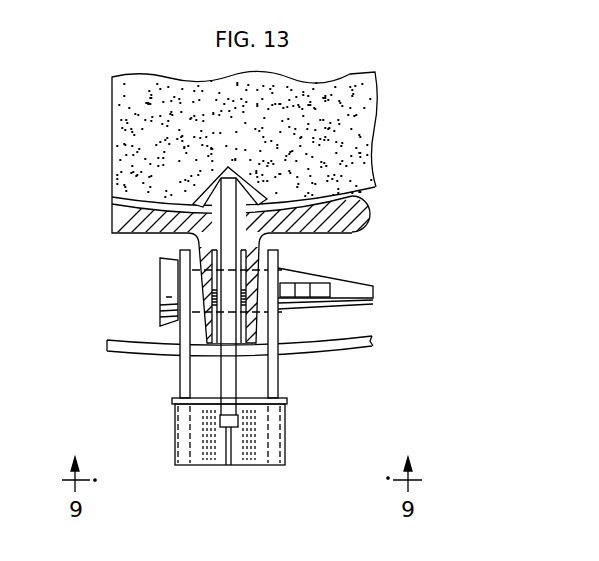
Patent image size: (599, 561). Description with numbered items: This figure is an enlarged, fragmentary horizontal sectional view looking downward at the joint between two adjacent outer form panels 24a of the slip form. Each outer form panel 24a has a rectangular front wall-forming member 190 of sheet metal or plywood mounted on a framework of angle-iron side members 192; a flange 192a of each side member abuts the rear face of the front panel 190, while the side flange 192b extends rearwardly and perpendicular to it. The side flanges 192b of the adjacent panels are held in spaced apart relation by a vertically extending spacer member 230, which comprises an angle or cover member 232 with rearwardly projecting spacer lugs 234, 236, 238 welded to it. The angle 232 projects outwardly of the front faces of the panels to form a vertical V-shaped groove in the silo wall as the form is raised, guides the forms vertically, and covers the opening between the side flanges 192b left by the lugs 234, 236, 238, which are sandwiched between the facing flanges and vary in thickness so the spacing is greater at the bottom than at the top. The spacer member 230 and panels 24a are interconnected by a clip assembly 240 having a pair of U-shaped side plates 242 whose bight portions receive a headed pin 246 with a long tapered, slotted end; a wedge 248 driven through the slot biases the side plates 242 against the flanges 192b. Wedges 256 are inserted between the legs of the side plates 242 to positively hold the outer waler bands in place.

The front planar face or wall-forming member 190 is at (118, 196).
The vertically extending side member 192 is at (124, 238).
The flange 192a is at (180, 208).
The side flange 192b is at (255, 327).
The spacer member 230 is at (240, 167).
The angle or cover member 232 is at (219, 178).
The spacer lug 234 is at (291, 239).
The spacer lug 236 is at (291, 239).
The spacer lug 238 is at (228, 203).
The outer form panel 24a is at (144, 258).
The headed pin 246 is at (283, 277).
The wedge 248 is at (323, 288).
The U-shaped side plate 242 is at (182, 383).
The clip assembly 240 is at (231, 470).
The wedge 256 is at (228, 410).